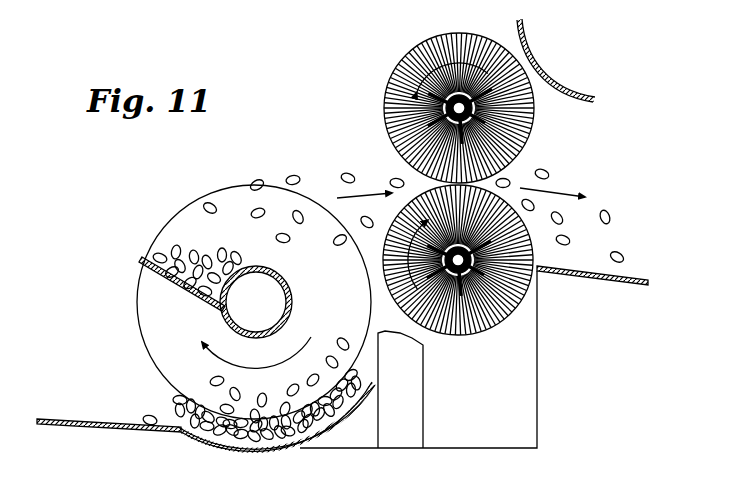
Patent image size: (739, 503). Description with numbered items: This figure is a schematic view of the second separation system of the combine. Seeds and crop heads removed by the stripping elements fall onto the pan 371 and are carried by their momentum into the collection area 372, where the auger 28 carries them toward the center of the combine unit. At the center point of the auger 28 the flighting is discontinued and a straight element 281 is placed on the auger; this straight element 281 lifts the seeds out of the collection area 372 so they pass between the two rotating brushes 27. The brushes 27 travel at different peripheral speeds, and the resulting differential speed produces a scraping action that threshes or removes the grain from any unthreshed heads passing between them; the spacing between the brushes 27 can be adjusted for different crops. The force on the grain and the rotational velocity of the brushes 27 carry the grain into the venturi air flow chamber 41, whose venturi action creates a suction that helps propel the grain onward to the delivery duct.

The rotating brushes 27 is at (396, 72).
The auger 28 is at (211, 190).
The straight element 281 is at (146, 260).
The venturi air flow chamber 41 is at (574, 278).
The pan 371 is at (87, 428).
The collection area 372 is at (330, 432).